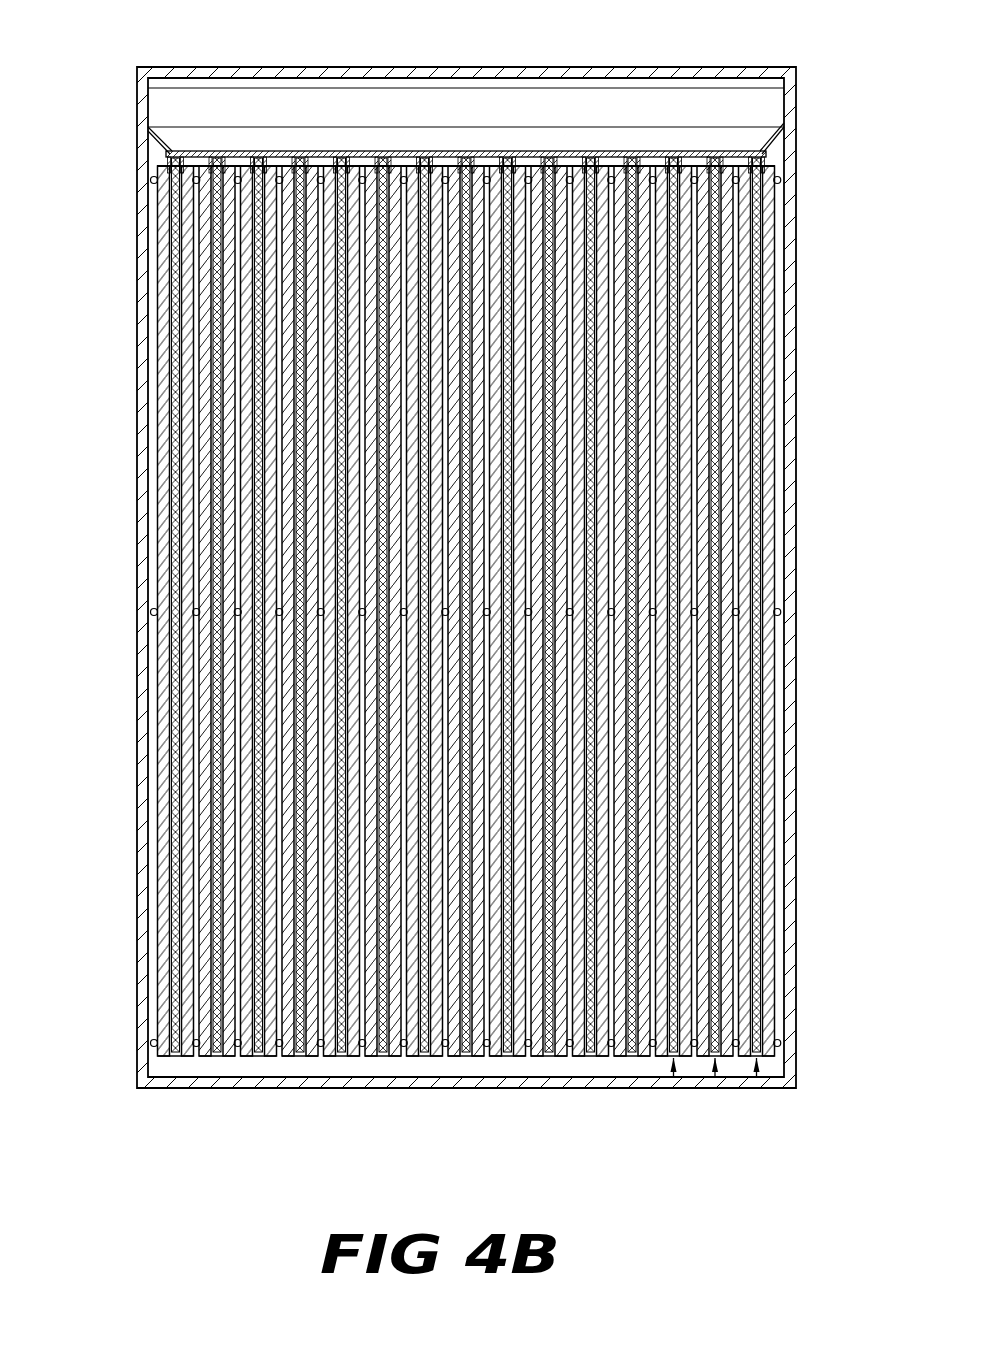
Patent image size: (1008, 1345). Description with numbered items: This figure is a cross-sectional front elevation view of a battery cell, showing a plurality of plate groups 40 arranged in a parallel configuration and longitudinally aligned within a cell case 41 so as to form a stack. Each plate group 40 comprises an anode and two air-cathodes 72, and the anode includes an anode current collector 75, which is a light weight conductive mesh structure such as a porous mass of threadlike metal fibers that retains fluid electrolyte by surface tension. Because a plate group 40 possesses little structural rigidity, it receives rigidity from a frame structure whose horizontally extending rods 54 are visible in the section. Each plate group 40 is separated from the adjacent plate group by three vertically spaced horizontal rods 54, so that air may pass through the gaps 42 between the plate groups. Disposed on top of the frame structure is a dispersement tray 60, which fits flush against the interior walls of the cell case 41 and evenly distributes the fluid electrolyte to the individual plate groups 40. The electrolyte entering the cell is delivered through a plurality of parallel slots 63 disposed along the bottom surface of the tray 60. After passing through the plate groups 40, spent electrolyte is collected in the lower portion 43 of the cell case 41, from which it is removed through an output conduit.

The plate group 40 is at (674, 1078).
The cell case 41 is at (147, 692).
The gaps 42 is at (468, 606).
The lower portion 43 is at (218, 1074).
The horizontal rods 54 is at (783, 178).
The dispersement tray 60 is at (765, 137).
The slots 63 is at (261, 151).
The air-cathode 72 is at (165, 343).
The anode current collector 75 is at (165, 243).